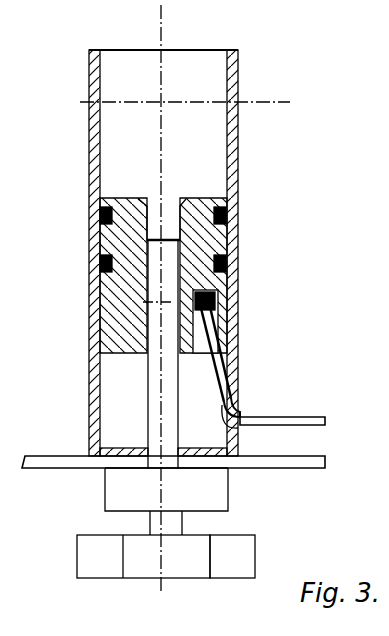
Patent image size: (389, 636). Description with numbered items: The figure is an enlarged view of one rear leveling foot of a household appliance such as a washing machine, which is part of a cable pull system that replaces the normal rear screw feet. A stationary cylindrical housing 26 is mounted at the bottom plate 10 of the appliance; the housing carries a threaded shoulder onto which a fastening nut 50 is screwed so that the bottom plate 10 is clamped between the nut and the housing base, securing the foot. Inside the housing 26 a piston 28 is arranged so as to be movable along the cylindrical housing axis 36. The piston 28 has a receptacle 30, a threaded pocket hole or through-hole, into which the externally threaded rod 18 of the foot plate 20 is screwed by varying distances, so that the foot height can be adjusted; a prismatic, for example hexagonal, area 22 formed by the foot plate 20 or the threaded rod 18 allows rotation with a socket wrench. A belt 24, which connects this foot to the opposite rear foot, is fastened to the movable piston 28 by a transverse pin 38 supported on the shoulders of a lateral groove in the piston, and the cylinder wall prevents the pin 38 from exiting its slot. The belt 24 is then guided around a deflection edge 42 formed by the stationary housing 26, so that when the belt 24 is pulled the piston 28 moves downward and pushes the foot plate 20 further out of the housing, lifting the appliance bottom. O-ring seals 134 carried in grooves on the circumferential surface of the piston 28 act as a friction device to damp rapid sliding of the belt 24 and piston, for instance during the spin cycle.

The bottom plate 10 is at (321, 470).
The threaded rod 18 is at (146, 401).
The foot plate 20 is at (143, 567).
The prismatic area 22 is at (240, 548).
The belt 24 is at (280, 416).
The cylindrical housing 26 is at (237, 236).
The piston 28 is at (112, 312).
The receptacle 30 is at (183, 201).
The cylindrical housing axis 36 is at (168, 31).
The transverse pin 38 is at (228, 300).
The deflection edge 42 is at (250, 414).
The fastening nut 50 is at (218, 490).
The O-ring seals 134 is at (222, 264).